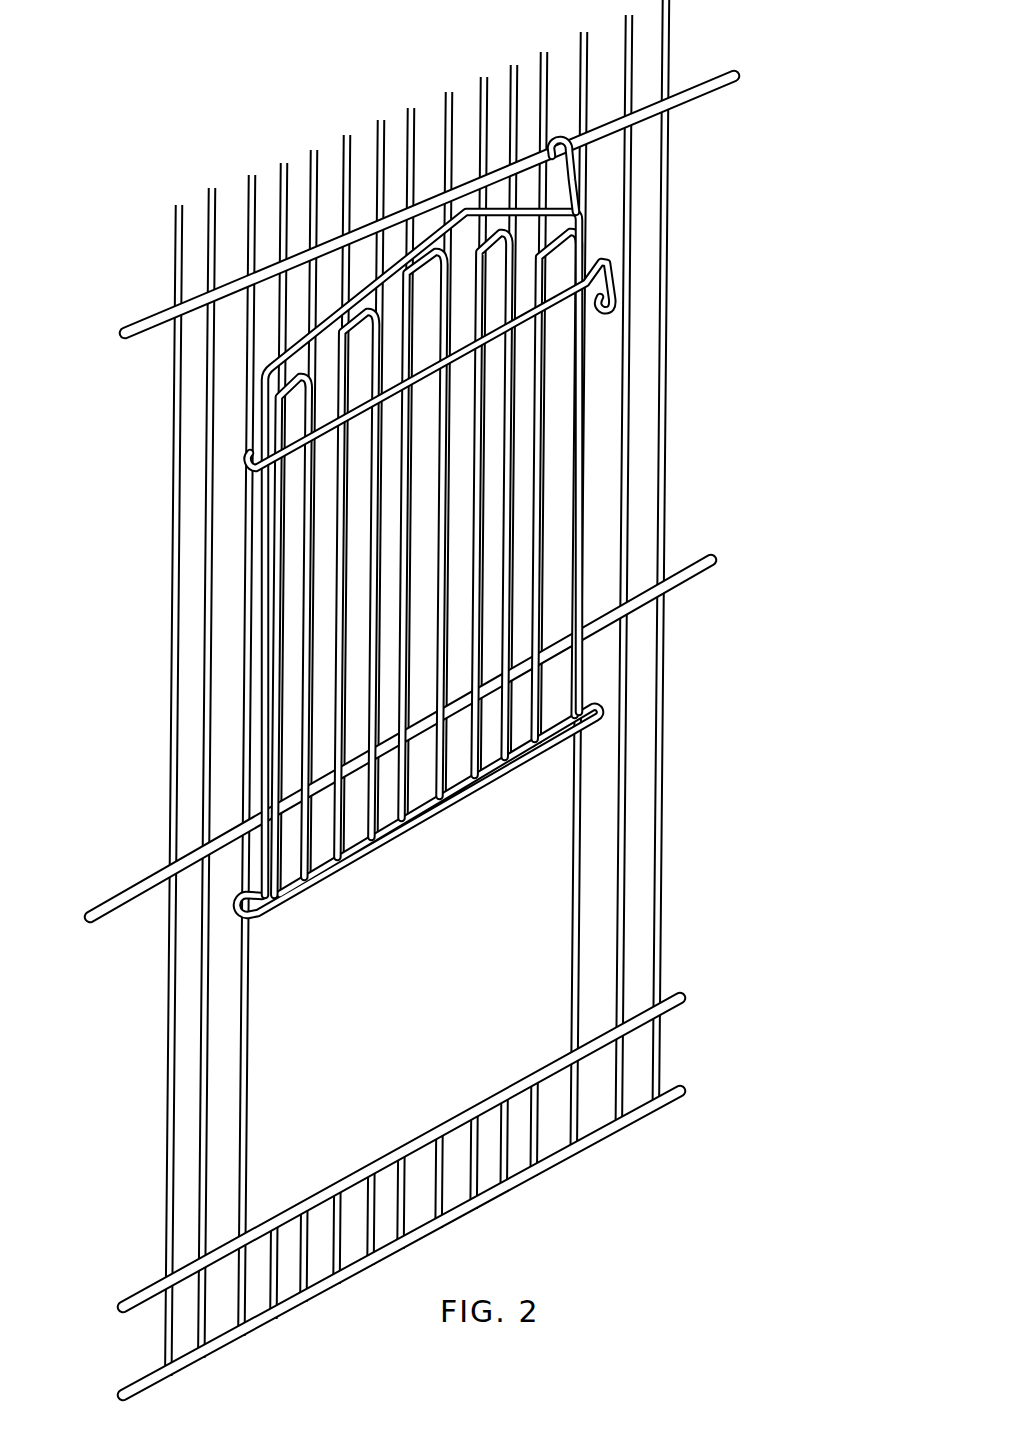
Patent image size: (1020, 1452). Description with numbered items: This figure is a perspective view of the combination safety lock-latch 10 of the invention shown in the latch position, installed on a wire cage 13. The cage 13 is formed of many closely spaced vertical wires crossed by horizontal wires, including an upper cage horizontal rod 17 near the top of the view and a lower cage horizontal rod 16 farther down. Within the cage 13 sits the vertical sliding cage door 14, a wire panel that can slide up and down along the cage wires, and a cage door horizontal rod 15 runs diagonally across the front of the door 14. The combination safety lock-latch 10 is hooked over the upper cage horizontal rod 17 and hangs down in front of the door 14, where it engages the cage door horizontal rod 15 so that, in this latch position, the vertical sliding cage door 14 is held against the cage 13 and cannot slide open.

The combination safety lock-latch 10 is at (543, 527).
The cage 13 is at (662, 888).
The vertical sliding cage door 14 is at (585, 451).
The cage door horizontal rod 15 is at (527, 318).
The lower cage horizontal rod 16 is at (638, 603).
The upper cage horizontal rod 17 is at (726, 96).